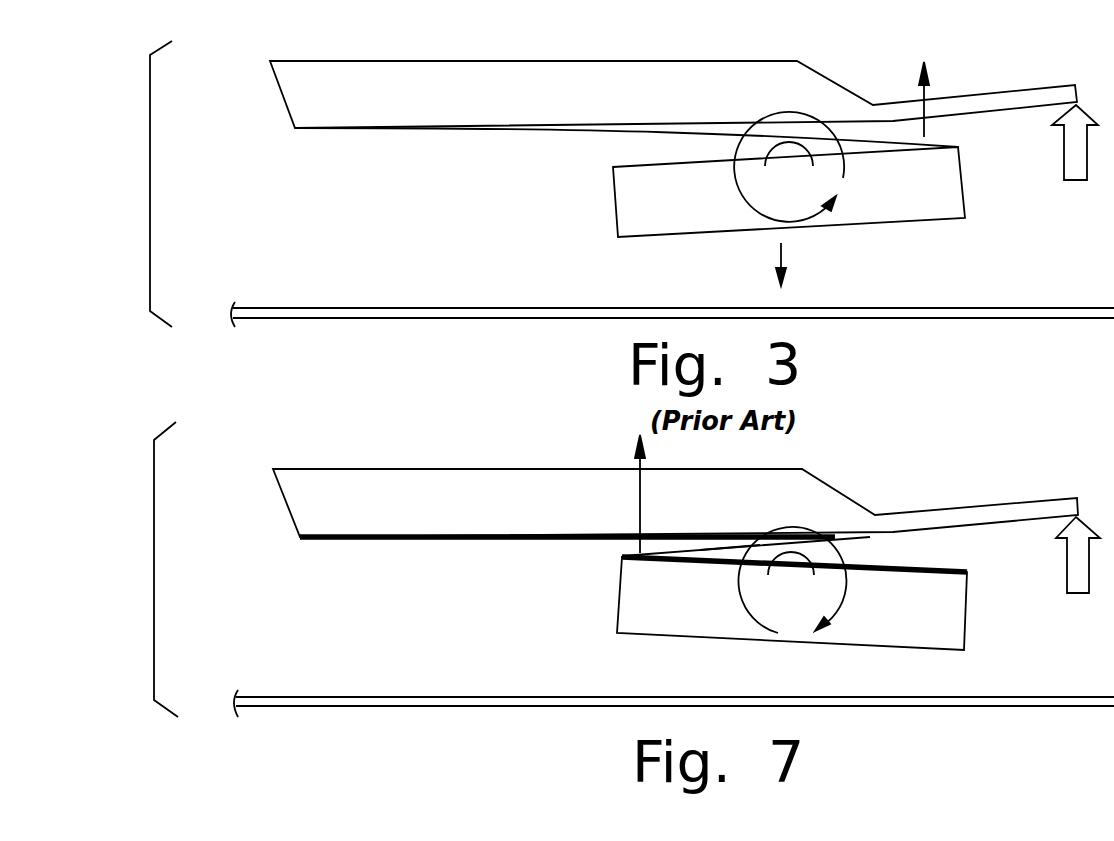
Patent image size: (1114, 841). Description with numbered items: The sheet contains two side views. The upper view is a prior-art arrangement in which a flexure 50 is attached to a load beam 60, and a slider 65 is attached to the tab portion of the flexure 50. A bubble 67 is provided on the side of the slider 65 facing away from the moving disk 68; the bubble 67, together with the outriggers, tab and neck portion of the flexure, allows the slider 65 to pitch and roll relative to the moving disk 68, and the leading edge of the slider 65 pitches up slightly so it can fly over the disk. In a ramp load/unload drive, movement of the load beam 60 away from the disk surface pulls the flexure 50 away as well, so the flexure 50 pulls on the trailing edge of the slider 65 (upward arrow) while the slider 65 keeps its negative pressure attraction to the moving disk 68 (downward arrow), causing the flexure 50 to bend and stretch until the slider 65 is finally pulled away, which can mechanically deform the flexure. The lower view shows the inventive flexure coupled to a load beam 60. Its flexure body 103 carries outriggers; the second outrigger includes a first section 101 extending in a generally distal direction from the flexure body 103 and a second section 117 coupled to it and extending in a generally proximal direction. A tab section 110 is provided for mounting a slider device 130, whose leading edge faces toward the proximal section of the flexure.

In FIG. 3, the flexure 50 is at (350, 130).
In FIG. 3, the load beam 60 is at (321, 69).
In FIG. 7, the load beam 60 is at (339, 468).
In FIG. 3, the slider 65 is at (614, 222).
In FIG. 3, the bubble 67 is at (780, 158).
In FIG. 3, the moving disk 68 is at (293, 309).
In FIG. 7, the first section of second outrigger 101 is at (730, 534).
In FIG. 7, the flexure body 103 is at (403, 542).
In FIG. 7, the tab section 110 is at (923, 565).
In FIG. 7, the second section of second outrigger 117 is at (665, 552).
In FIG. 7, the slider device 130 is at (877, 650).